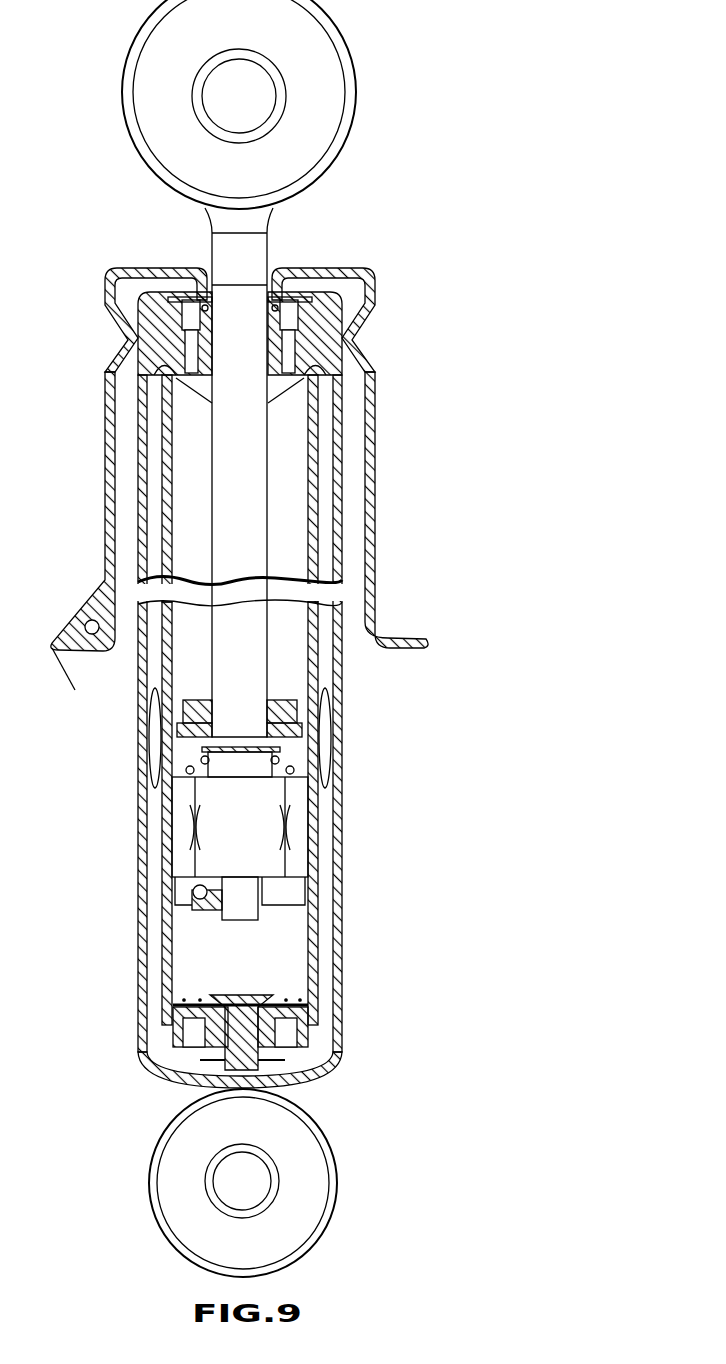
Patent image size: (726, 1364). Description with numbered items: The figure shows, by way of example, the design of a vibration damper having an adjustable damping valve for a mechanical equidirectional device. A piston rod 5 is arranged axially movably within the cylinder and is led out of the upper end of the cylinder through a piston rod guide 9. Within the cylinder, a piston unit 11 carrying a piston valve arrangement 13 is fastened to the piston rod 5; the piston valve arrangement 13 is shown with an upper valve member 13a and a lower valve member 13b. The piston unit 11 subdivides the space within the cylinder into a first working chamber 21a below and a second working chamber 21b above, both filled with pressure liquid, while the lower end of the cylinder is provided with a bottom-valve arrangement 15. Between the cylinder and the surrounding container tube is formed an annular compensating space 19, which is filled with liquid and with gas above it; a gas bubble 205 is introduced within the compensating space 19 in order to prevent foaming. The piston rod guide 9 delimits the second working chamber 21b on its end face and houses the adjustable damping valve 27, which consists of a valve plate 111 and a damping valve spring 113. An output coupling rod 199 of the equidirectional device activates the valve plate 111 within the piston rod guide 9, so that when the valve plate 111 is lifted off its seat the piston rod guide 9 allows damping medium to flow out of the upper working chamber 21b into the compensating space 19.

The piston rod 5 is at (255, 695).
The piston rod guide 9 is at (278, 382).
The piston unit 11 is at (298, 860).
The piston valve arrangement 13 is at (290, 815).
The upper valve member 13a is at (186, 768).
The lower valve member 13b is at (198, 920).
The bottom-valve arrangement 15 is at (305, 1030).
The compensating space 19 is at (156, 905).
The first working chamber 21a is at (305, 925).
The second working chamber 21b is at (292, 500).
The adjustable damping valve 27 is at (176, 268).
The valve plate 111 is at (165, 338).
The damping valve spring 113 is at (142, 277).
The output coupling rod 199 is at (108, 430).
The gas bubble 205 is at (327, 737).